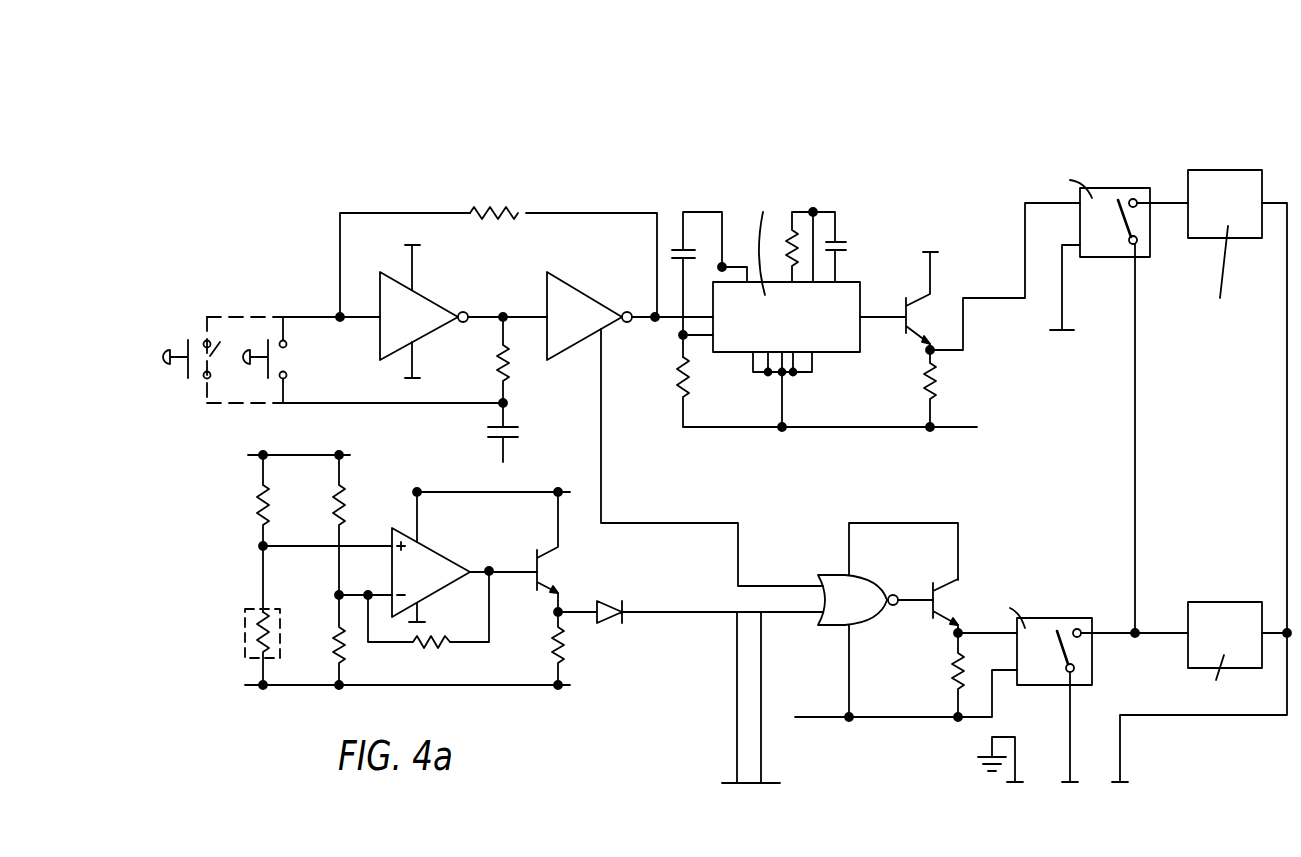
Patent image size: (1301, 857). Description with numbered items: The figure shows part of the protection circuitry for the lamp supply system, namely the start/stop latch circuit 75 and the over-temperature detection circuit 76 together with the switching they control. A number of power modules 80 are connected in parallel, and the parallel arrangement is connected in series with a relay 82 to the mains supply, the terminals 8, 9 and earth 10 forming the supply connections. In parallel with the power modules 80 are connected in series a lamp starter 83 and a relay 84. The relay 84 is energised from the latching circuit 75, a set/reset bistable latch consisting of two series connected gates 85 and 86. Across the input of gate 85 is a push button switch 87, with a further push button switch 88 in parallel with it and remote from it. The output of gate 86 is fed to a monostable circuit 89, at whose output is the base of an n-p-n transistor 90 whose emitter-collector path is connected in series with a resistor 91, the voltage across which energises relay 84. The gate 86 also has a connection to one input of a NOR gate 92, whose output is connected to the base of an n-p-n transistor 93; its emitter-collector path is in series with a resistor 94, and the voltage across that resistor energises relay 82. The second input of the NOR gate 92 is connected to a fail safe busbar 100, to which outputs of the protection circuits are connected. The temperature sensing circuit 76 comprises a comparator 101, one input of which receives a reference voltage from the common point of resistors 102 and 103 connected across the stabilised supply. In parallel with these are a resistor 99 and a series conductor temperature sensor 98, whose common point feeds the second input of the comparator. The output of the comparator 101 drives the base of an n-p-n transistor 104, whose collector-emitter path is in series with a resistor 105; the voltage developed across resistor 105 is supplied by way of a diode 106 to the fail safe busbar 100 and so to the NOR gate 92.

The start/stop latch circuit 75 is at (320, 208).
The over-temperature detection circuit 76 is at (218, 657).
The further push button switch 88 is at (213, 341).
The push button switch 87 is at (300, 360).
The gate 85 is at (425, 311).
The gate 86 is at (588, 311).
The monostable circuit 89 is at (738, 343).
The n-p-n transistor 90 is at (905, 325).
The resistor 91 is at (940, 385).
The relay 84 is at (1150, 246).
The lamp starter 83 is at (1232, 228).
The resistor 99 is at (256, 498).
The resistor 102 is at (347, 495).
The conductor temperature sensor 98 is at (247, 606).
The resistor 103 is at (345, 636).
The comparator 101 is at (438, 552).
The n-p-n transistor 104 is at (531, 562).
The resistor 105 is at (551, 641).
The diode 106 is at (605, 618).
The fail safe busbar 100 is at (748, 762).
The NOR gate 92 is at (828, 572).
The n-p-n transistor 93 is at (950, 583).
The resistor 94 is at (950, 666).
The relay 82 is at (1054, 670).
The power modules 80 is at (1224, 601).
The earth terminal 10 is at (1018, 755).
The terminal 8 is at (1065, 773).
The terminal 9 is at (1115, 773).